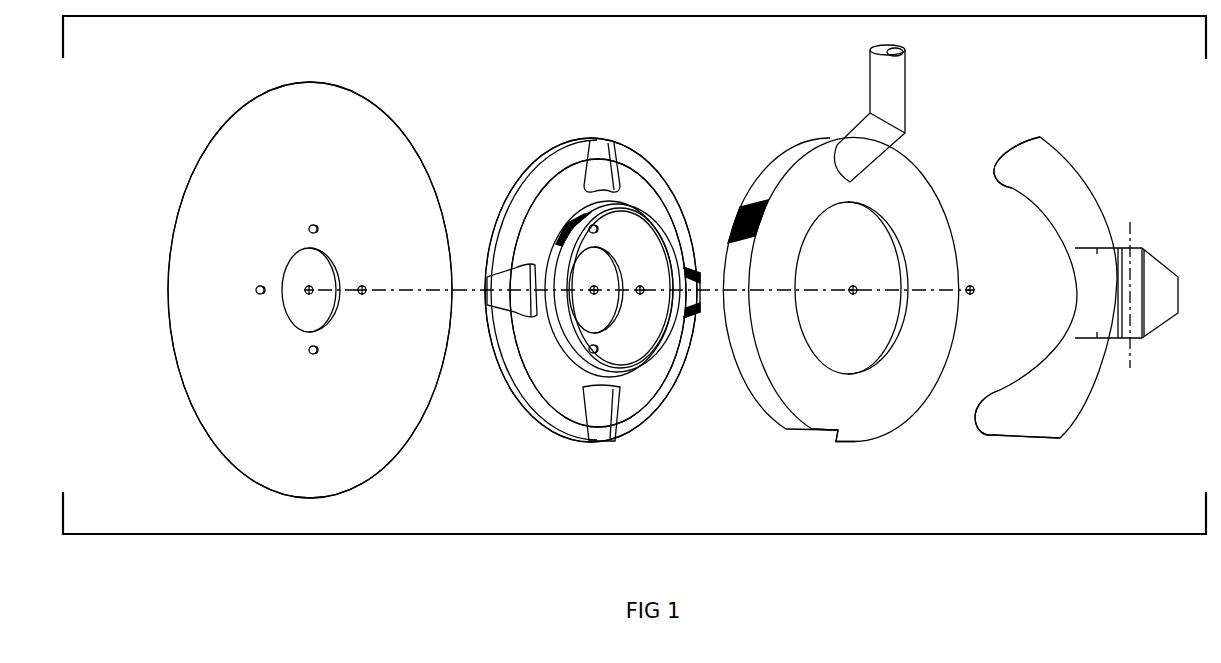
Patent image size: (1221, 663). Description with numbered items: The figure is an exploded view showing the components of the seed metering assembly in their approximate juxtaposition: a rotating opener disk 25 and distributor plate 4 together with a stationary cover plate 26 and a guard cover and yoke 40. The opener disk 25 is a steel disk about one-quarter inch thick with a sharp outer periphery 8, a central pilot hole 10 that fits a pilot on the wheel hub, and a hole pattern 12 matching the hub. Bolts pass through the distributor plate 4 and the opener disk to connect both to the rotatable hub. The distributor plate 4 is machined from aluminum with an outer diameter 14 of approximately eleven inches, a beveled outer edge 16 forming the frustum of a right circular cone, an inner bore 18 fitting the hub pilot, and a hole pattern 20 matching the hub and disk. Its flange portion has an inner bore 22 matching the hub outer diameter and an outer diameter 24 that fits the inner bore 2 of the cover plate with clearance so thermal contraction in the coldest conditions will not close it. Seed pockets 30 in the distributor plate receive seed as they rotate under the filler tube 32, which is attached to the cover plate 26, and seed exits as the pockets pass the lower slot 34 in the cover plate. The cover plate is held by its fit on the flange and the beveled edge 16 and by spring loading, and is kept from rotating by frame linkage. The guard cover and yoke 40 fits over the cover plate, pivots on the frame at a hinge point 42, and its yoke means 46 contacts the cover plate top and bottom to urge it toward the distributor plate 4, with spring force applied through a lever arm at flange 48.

The inner bore of the cover plate 2 is at (903, 280).
The distributor plate 4 is at (528, 217).
The sharp outer periphery 8 is at (371, 101).
The pilot hole 10 is at (296, 326).
The hole pattern 12 is at (257, 290).
The outer diameter 14 is at (522, 177).
The beveled outer edge 16 is at (557, 158).
The inner bore 18 is at (607, 257).
The hole pattern 20 is at (641, 280).
The inner bore of flange portion 22 is at (660, 323).
The outer diameter of flange portion 24 is at (563, 337).
The opener disk 25 is at (293, 126).
The cover plate 26 is at (918, 207).
The seed pockets 30 is at (601, 155).
The filler tube 32 is at (858, 150).
The lower slot in cover plate 34 is at (820, 433).
The guard cover and yoke 40 is at (1078, 325).
The hinge point 42 is at (1130, 350).
The yoke means 46 is at (1005, 170).
The flange 48 is at (1165, 297).